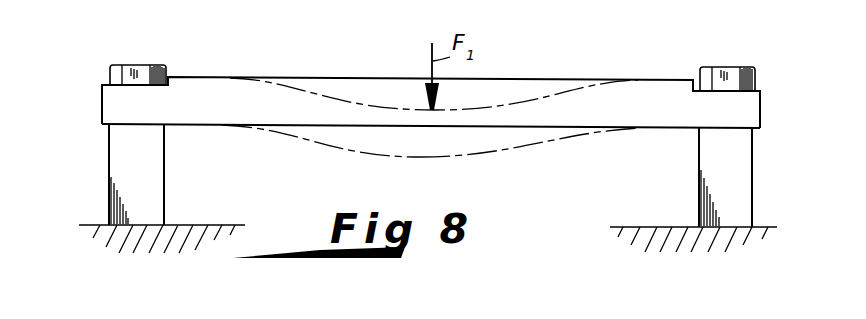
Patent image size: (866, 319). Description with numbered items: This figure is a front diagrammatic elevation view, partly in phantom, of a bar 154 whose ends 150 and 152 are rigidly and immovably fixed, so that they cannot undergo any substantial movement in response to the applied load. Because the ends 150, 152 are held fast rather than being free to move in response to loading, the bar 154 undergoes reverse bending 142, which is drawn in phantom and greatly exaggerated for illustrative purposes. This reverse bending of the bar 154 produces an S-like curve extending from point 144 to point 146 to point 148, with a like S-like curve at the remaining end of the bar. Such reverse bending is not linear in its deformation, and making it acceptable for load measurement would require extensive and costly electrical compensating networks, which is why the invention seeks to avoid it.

The reverse bending 142 is at (413, 160).
The point 144 is at (725, 107).
The point 146 is at (563, 117).
The point 148 is at (430, 134).
The end of the bar 150 is at (102, 100).
The end of the bar 152 is at (760, 117).
The bar 154 is at (350, 78).